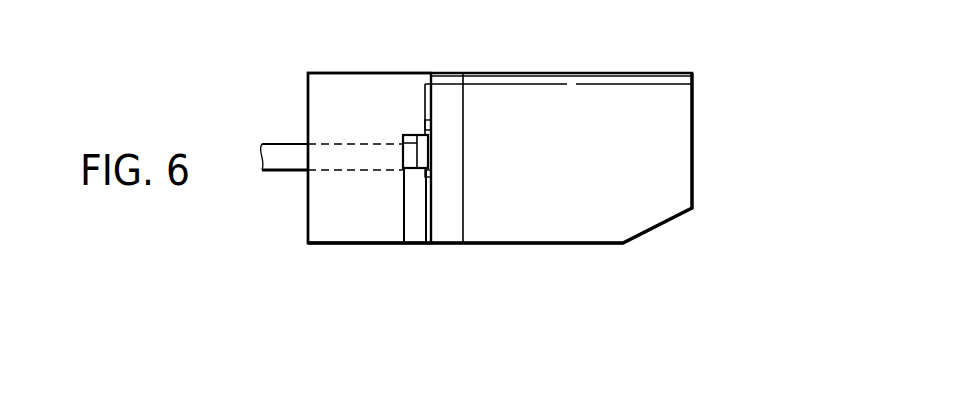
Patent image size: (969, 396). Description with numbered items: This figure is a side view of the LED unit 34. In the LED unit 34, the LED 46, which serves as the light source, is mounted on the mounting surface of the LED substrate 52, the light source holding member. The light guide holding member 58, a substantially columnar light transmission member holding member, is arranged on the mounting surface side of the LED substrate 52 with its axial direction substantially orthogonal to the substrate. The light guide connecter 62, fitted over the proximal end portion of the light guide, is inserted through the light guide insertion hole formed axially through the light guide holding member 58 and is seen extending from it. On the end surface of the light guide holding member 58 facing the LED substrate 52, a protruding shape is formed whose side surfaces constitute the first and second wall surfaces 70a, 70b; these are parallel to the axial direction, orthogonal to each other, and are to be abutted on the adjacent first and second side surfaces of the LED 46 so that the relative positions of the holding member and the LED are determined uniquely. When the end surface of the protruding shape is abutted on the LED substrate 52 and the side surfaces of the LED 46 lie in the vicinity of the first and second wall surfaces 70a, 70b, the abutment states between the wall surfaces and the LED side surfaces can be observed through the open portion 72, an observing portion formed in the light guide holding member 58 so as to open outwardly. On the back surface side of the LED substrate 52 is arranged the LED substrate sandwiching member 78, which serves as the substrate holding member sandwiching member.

The LED unit 34 is at (279, 86).
The light guide holding member 58 is at (330, 82).
The light guide connecter 62 is at (283, 161).
The LED substrate 52 is at (445, 86).
The LED substrate sandwiching member 78 is at (607, 84).
The first wall surface 70a is at (403, 137).
The second wall surface 70b is at (422, 122).
The LED 46 is at (429, 152).
The open portion 72 is at (413, 219).